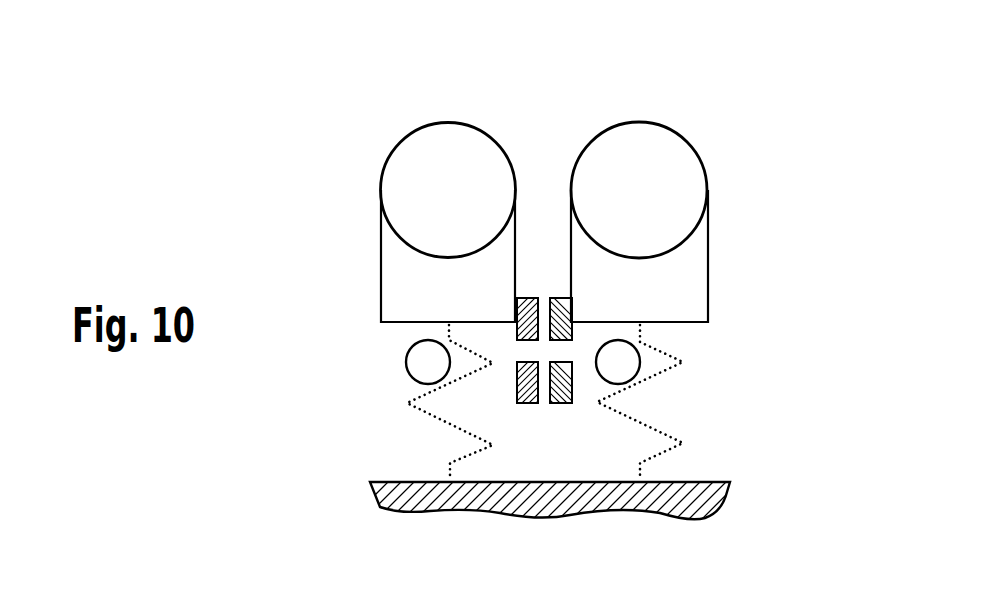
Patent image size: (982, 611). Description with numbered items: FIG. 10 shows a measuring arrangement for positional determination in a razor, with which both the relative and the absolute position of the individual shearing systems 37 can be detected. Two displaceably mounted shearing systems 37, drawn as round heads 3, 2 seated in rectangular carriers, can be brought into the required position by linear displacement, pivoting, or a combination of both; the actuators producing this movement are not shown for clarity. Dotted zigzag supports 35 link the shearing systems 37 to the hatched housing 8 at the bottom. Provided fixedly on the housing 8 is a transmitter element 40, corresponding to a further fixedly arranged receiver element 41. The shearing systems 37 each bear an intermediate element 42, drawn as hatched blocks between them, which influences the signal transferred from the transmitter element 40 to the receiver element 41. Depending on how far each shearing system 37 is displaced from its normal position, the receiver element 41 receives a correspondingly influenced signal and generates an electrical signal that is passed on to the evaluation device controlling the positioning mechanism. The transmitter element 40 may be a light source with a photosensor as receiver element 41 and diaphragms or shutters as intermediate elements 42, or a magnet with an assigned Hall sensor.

The roller 2 is at (675, 125).
The roller 3 is at (470, 123).
The housing 8 is at (697, 502).
The spring element 35 is at (667, 435).
The shearing system 37 is at (428, 300).
The transmitter element 40 is at (400, 364).
The receiver element 41 is at (595, 373).
The intermediate element 42 is at (512, 403).